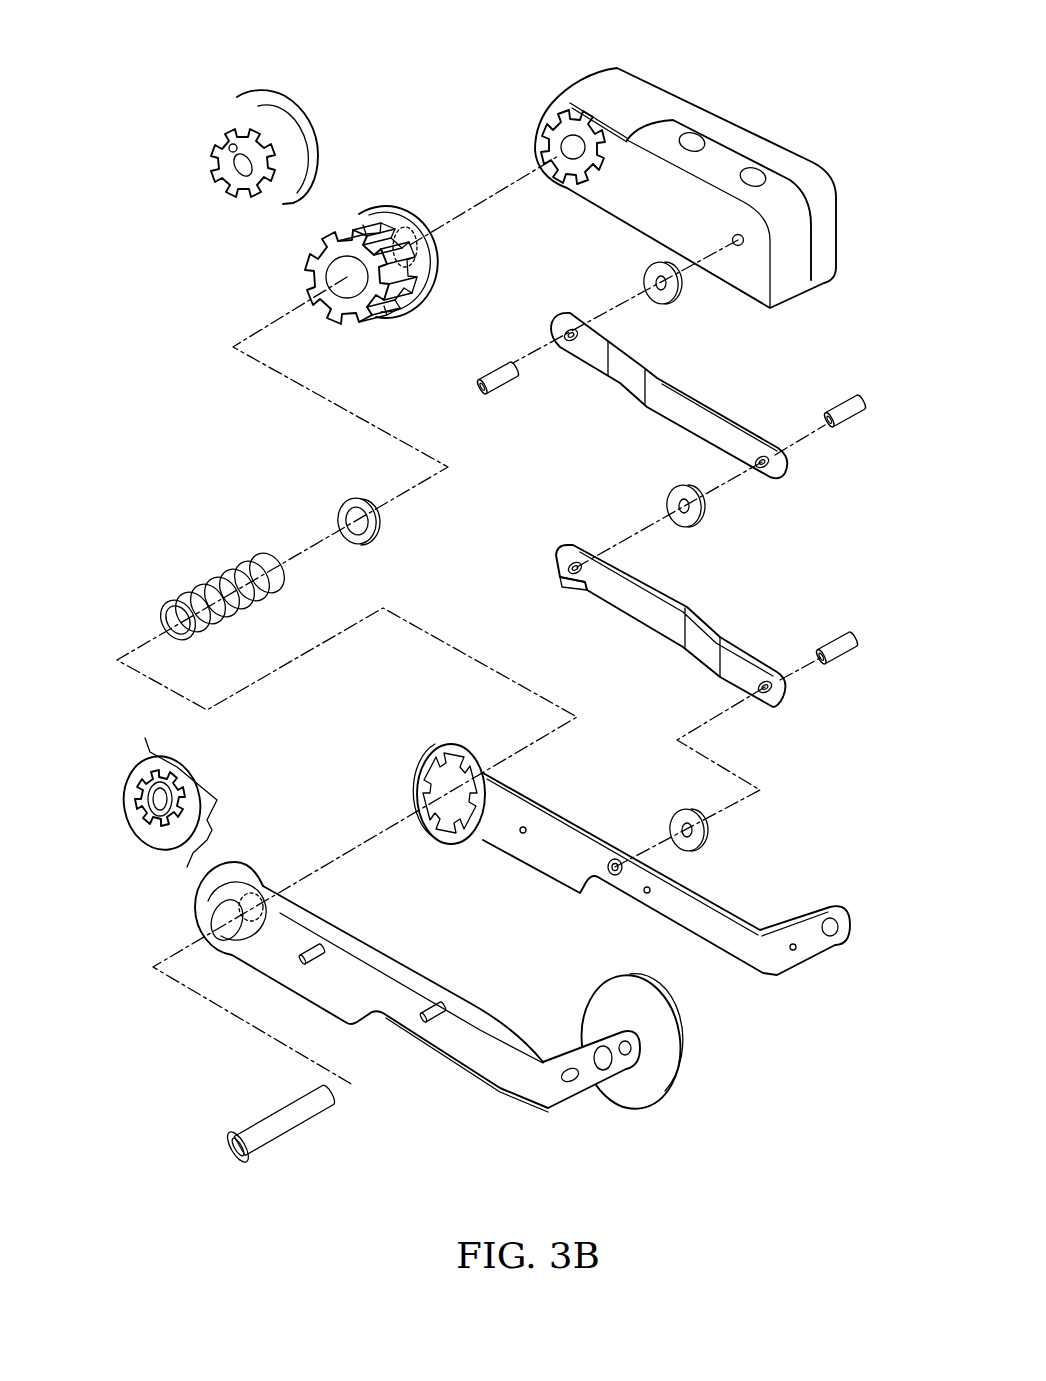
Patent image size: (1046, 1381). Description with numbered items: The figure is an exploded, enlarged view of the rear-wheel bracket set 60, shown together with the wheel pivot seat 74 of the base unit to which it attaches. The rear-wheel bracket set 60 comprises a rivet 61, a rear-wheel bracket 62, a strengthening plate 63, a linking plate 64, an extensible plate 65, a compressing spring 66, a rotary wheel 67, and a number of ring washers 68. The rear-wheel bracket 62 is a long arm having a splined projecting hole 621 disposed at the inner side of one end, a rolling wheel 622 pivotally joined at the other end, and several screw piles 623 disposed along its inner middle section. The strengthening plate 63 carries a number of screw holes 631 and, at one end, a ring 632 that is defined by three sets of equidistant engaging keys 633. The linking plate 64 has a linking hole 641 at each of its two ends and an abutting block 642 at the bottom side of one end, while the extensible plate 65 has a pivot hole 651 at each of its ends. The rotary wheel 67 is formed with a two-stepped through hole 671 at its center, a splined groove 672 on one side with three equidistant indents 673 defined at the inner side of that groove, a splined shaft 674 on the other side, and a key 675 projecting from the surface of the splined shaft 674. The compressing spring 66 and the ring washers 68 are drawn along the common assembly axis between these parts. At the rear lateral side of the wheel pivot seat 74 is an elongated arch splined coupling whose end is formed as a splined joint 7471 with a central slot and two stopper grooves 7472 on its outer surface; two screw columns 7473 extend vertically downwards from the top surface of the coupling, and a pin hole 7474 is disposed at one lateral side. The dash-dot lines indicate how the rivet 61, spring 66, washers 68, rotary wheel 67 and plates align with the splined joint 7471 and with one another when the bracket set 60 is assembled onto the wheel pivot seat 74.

The rear-wheel bracket set 60 is at (736, 1196).
The rivet 61 is at (294, 1153).
The rear-wheel bracket 62 is at (473, 1016).
The splined projecting hole 621 is at (152, 838).
The rolling wheel 622 is at (662, 1080).
The screw piles 623 is at (424, 1028).
The strengthening plate 63 is at (594, 900).
The screw holes 631 is at (617, 876).
The ring 632 is at (483, 822).
The engaging keys 633 is at (417, 774).
The linking plate 64 is at (676, 653).
The linking hole 641 is at (767, 692).
The abutting block 642 is at (582, 580).
The extensible plate 65 is at (693, 419).
The pivot hole 651 is at (780, 475).
The compressing spring 66 is at (214, 566).
The rotary wheel 67 is at (358, 279).
The two-stepped through hole 671 is at (322, 282).
The splined groove 672 is at (354, 238).
The indents 673 is at (414, 278).
The splined shaft 674 is at (229, 164).
The key 675 is at (228, 148).
The ring washers 68 is at (714, 846).
The wheel pivot seat 74 is at (645, 175).
The splined joint 7471 is at (525, 180).
The stopper grooves 7472 is at (575, 182).
The screw columns 7473 is at (756, 180).
The pin hole 7474 is at (745, 247).